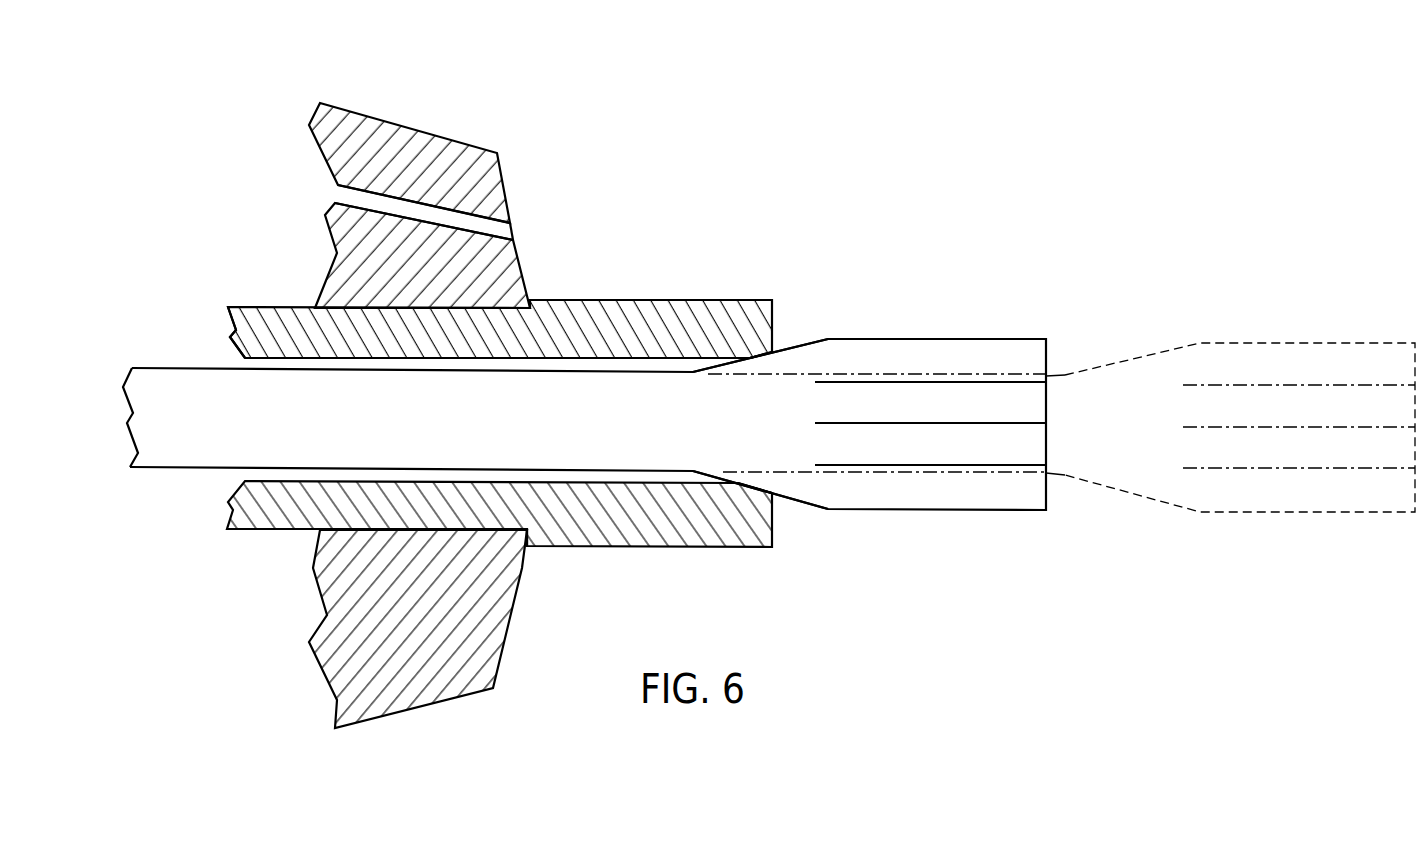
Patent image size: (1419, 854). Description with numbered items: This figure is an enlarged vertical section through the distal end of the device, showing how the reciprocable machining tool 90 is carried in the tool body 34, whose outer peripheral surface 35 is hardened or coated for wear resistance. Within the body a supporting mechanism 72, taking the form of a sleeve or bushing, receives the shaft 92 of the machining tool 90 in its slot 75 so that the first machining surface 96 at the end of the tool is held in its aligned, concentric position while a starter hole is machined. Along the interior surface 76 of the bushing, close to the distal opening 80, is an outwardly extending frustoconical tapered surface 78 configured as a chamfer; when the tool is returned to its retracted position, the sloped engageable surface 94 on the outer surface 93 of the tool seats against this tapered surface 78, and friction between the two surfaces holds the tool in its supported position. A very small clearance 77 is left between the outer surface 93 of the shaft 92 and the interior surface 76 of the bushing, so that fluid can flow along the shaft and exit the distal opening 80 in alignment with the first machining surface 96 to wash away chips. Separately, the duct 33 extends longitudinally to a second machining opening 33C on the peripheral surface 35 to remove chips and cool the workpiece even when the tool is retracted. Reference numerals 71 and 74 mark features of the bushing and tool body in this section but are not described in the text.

The duct 33 is at (337, 191).
The second machining opening 33C is at (507, 233).
The tool body 34 is at (440, 157).
The peripheral surface 35 is at (428, 705).
The step 71 is at (482, 527).
The supporting mechanism 72 is at (786, 302).
The upper plate 74 is at (677, 298).
The slot 75 is at (563, 357).
The interior surface 76 is at (613, 483).
The clearance 77 is at (222, 357).
The tapered surface 78 is at (760, 487).
The opening 80 is at (775, 364).
The machining tool 90 is at (972, 528).
The shaft 92 is at (411, 437).
The outer surface 93 is at (175, 468).
The engageable surface 94 is at (807, 507).
The first machining surface 96 is at (1012, 368).